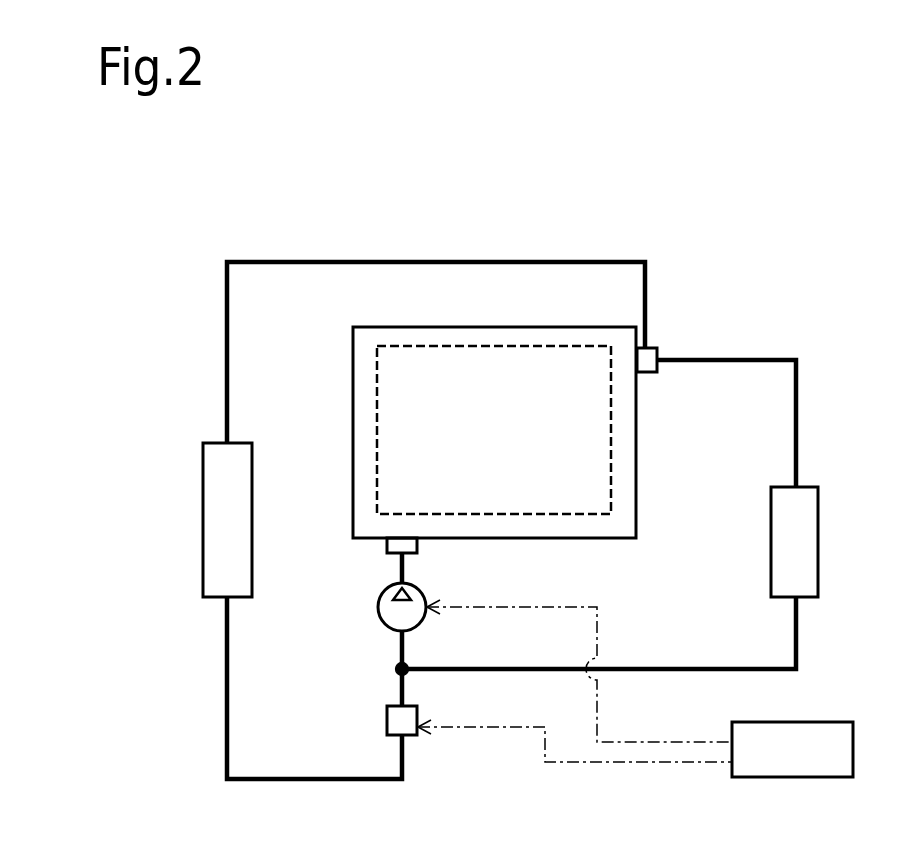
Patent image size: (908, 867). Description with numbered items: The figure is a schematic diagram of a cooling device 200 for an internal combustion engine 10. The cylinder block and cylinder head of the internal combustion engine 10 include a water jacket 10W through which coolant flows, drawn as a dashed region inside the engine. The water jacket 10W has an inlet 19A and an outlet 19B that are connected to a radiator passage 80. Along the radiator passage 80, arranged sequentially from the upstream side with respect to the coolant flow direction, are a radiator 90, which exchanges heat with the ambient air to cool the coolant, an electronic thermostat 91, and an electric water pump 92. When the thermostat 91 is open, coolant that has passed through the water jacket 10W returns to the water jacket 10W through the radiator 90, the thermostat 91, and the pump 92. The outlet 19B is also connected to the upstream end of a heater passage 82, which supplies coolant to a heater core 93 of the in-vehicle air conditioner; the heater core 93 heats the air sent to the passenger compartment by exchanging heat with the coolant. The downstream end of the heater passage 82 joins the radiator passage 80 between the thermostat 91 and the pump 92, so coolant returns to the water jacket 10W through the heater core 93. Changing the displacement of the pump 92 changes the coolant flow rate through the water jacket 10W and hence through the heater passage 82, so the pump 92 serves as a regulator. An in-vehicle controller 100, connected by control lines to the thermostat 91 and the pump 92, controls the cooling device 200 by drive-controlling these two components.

The cooling device 200 is at (190, 276).
The radiator passage 80 is at (437, 262).
The heater passage 82 is at (725, 359).
The internal combustion engine 10 is at (352, 395).
The water jacket 10W is at (492, 507).
The inlet 19A is at (385, 546).
The outlet 19B is at (644, 373).
The radiator 90 is at (253, 522).
The electronic thermostat 91 is at (418, 711).
The electric water pump 92 is at (420, 623).
The heater core 93 is at (770, 540).
The in-vehicle controller 100 is at (775, 721).